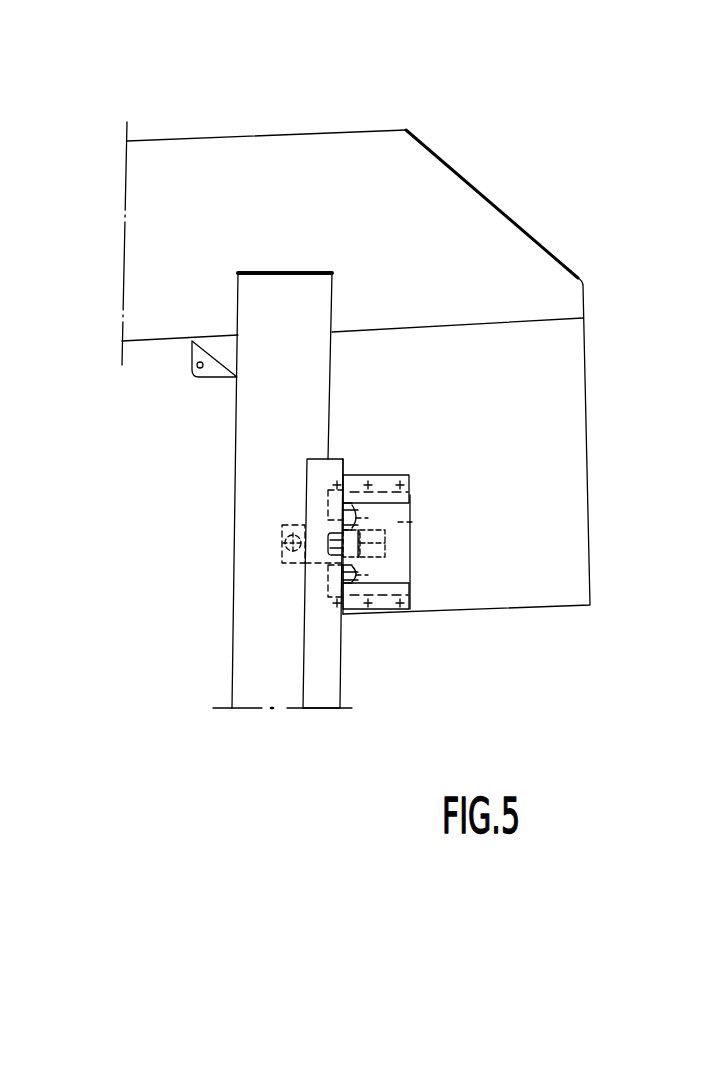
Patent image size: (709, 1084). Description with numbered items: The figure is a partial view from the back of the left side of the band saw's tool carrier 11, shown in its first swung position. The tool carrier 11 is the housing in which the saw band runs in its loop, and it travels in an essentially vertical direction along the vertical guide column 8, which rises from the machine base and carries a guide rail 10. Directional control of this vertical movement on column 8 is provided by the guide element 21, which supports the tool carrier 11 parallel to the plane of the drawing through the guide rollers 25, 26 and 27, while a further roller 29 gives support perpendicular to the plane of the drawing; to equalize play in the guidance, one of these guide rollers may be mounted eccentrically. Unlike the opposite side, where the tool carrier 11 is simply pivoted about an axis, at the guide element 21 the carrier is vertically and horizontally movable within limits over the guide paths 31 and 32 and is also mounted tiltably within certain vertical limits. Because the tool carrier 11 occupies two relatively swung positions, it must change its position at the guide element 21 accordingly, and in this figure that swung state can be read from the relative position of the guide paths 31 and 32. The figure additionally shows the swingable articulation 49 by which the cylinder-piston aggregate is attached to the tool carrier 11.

The vertical guide column 8 is at (260, 687).
The guide rail 10 is at (327, 688).
The tool carrier 11 is at (352, 175).
The guide element 21 is at (400, 525).
The guide roller 25 is at (328, 518).
The guide roller 26 is at (330, 598).
The guide roller 27 is at (283, 543).
The roller 29 is at (367, 555).
The guide path 31 is at (378, 477).
The guide path 32 is at (340, 617).
The swingable articulation 49 is at (192, 358).